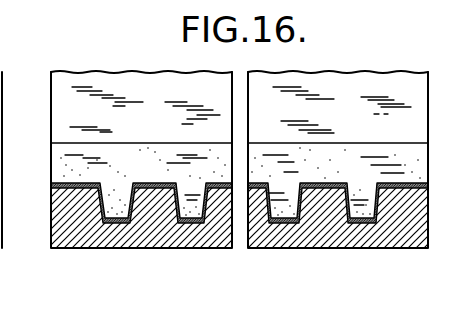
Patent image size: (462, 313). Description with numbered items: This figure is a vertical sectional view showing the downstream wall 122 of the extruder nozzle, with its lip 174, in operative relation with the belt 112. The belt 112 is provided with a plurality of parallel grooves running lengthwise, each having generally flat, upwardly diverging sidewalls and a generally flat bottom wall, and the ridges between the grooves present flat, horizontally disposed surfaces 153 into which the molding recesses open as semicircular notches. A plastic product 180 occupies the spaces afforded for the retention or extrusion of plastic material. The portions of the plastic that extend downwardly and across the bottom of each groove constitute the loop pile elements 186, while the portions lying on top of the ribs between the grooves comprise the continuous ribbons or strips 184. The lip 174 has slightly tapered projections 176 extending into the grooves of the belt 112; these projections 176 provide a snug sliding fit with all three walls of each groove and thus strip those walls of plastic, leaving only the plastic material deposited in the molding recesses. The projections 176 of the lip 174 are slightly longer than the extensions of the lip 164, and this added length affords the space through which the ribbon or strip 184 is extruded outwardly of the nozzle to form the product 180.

The belt 112 is at (153, 236).
The downstream wall 122 is at (360, 79).
The ridge surface 153 is at (328, 184).
The lip 164 is at (3, 158).
The lip 174 is at (67, 162).
The projection 176 is at (286, 207).
The plastic product 180 is at (106, 203).
The continuous ribbon or strip 184 is at (154, 184).
The loop pile element 186 is at (199, 222).